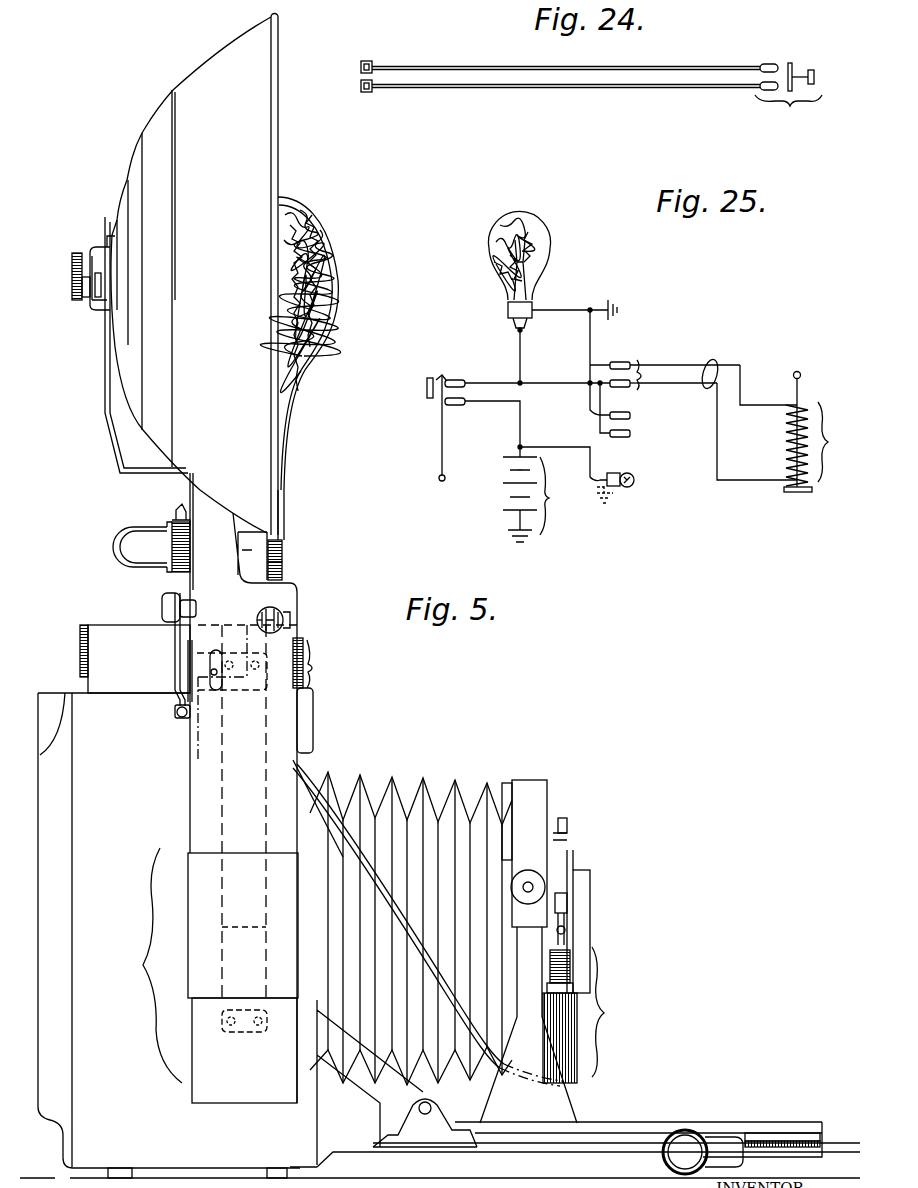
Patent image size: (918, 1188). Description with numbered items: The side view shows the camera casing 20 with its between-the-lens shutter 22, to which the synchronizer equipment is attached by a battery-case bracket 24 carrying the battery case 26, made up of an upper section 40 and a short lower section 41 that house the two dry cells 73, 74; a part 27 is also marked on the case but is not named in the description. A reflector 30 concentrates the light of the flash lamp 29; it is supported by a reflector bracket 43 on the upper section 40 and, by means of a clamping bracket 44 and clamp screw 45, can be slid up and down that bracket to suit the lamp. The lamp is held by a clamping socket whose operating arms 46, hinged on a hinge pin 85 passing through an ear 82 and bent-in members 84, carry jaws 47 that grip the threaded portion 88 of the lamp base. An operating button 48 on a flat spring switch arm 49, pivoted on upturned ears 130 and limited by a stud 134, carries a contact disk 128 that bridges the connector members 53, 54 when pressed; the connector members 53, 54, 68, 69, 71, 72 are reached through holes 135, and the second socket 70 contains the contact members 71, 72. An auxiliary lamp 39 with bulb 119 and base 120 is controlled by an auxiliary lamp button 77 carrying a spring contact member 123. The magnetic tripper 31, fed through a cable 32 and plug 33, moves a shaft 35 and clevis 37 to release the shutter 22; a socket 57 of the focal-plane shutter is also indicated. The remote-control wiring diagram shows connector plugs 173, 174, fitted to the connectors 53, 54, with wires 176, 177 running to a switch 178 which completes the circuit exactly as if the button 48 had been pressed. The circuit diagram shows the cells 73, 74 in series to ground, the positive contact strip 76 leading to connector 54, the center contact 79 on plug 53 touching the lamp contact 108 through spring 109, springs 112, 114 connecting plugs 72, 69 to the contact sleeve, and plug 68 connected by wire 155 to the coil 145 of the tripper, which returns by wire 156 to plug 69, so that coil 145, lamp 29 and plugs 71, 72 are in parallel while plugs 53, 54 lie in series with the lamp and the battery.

In FIG. 5, the camera casing 20 is at (80, 695).
In FIG. 5, the between-the-lens shutter 22 is at (568, 848).
In FIG. 25, the between-the-lens shutter 22 is at (713, 362).
In FIG. 5, the battery-case bracket 24 is at (222, 928).
In FIG. 5, the battery case 26 is at (145, 965).
In FIG. 5, the panel 27 is at (197, 885).
In FIG. 5, the flash lamp 29 is at (322, 253).
In FIG. 25, the flash lamp 29 is at (551, 243).
In FIG. 5, the reflector 30 is at (278, 176).
In FIG. 5, the magnetic tripper 31 is at (589, 1015).
In FIG. 25, the magnetic tripper 31 is at (835, 442).
In FIG. 5, the cable 32 is at (310, 820).
In FIG. 25, the plug 33 is at (655, 366).
In FIG. 5, the shaft or rod 35 is at (571, 940).
In FIG. 5, the clevis 37 is at (570, 916).
In FIG. 5, the auxiliary lamp 39 is at (318, 695).
In FIG. 5, the upper battery-case section 40 is at (197, 786).
In FIG. 5, the lower battery-case section 41 is at (198, 1090).
In FIG. 5, the reflector bracket 43 is at (104, 384).
In FIG. 5, the clamping bracket 44 is at (93, 250).
In FIG. 5, the clamp screw 45 is at (72, 278).
In FIG. 5, the operating arms 46 is at (118, 546).
In FIG. 5, the jaws 47 is at (282, 554).
In FIG. 25, the jaws 47 is at (562, 309).
In FIG. 5, the operating button 48 is at (162, 610).
In FIG. 25, the operating button 48 is at (427, 396).
In FIG. 5, the switch arm 49 is at (175, 641).
In FIG. 25, the switch arm 49 is at (442, 430).
In FIG. 25, the connector member 53 is at (455, 380).
In FIG. 25, the connector member 54 is at (455, 405).
In FIG. 5, the socket of the focal-plane shutter 57 is at (50, 707).
In FIG. 25, the contact member 68 is at (612, 362).
In FIG. 25, the contact member 69 is at (625, 392).
In FIG. 5, the second socket 70 is at (284, 621).
In FIG. 5, the contact member 71 is at (283, 612).
In FIG. 25, the contact member 71 is at (630, 419).
In FIG. 5, the contact member 72 is at (283, 631).
In FIG. 25, the contact member 72 is at (630, 436).
In FIG. 25, the battery 73 is at (541, 494).
In FIG. 25, the battery 74 is at (548, 491).
In FIG. 25, the positive contact strip 76 is at (523, 426).
In FIG. 5, the auxiliary lamp button 77 is at (216, 652).
In FIG. 25, the center contact 79 is at (523, 332).
In FIG. 5, the ear 82 is at (173, 520).
In FIG. 5, the bent-in members 84 is at (178, 530).
In FIG. 5, the hinge pin 85 is at (181, 514).
In FIG. 5, the threaded portion of the lamp base 88 is at (282, 572).
In FIG. 25, the threaded portion of the lamp base 88 is at (508, 308).
In FIG. 25, the lamp contact 108 is at (514, 324).
In FIG. 25, the spring 109 is at (487, 381).
In FIG. 25, the spring 112 is at (600, 430).
In FIG. 25, the coiled spring 114 is at (545, 381).
In FIG. 25, the bulb 119 is at (630, 486).
In FIG. 25, the base 120 is at (612, 473).
In FIG. 25, the spring contact member 123 is at (600, 505).
In FIG. 25, the contact disk 128 is at (438, 379).
In FIG. 5, the upturned ears 130 is at (177, 718).
In FIG. 5, the stud 134 is at (186, 668).
In FIG. 25, the holes 135 is at (800, 380).
In FIG. 25, the coil 145 is at (790, 450).
In FIG. 25, the wire 155 is at (742, 383).
In FIG. 25, the wire 156 is at (762, 481).
In FIG. 5, the connector plug 173 is at (567, 806).
In FIG. 24, the connector plug 173 is at (372, 62).
In FIG. 24, the connector plug 174 is at (372, 92).
In FIG. 24, the wire 176 is at (505, 67).
In FIG. 24, the wire 177 is at (510, 88).
In FIG. 24, the switch 178 is at (788, 94).